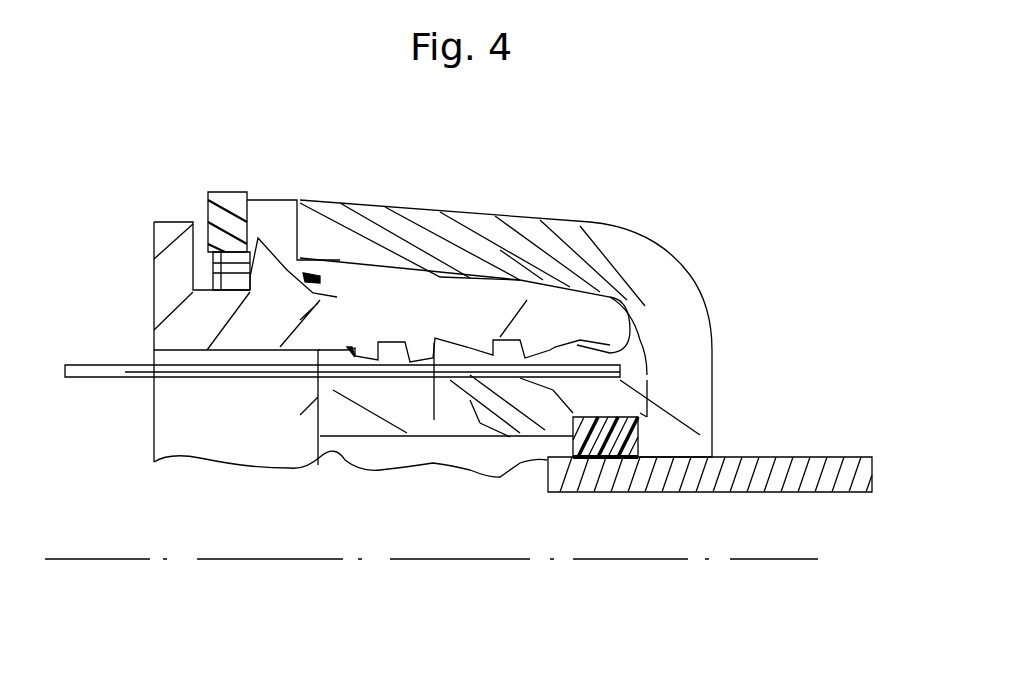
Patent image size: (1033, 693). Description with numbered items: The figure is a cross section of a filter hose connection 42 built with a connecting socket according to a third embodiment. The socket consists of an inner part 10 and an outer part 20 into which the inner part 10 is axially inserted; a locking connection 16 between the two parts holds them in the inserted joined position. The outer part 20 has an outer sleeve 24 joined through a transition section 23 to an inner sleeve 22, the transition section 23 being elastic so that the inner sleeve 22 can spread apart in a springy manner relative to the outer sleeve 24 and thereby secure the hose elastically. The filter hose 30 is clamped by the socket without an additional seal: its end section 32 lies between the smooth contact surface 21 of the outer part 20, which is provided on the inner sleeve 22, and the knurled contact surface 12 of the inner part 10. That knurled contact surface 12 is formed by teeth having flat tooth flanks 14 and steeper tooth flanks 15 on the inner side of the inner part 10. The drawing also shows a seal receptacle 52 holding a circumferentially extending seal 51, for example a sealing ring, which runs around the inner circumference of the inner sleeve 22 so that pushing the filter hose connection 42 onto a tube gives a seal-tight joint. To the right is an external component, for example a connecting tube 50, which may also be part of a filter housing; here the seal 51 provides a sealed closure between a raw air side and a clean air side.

The filter hose connection 42 is at (200, 79).
The locking connection 16 is at (240, 242).
The smooth contact surface 21 is at (475, 375).
The outer sleeve 24 is at (450, 217).
The inner part 10 is at (522, 318).
The outer part 20 is at (687, 216).
The end section of the filter hose 32 is at (617, 340).
The transition section 23 is at (690, 327).
The seal receptacle 52 is at (640, 413).
The seal 51 is at (640, 448).
The connecting tube 50 is at (612, 480).
The filter hose 30 is at (110, 365).
The knurled contact surface 12 is at (330, 378).
The flat tooth flanks 14 is at (402, 355).
The steeper tooth flanks 15 is at (434, 420).
The inner sleeve 22 is at (470, 400).